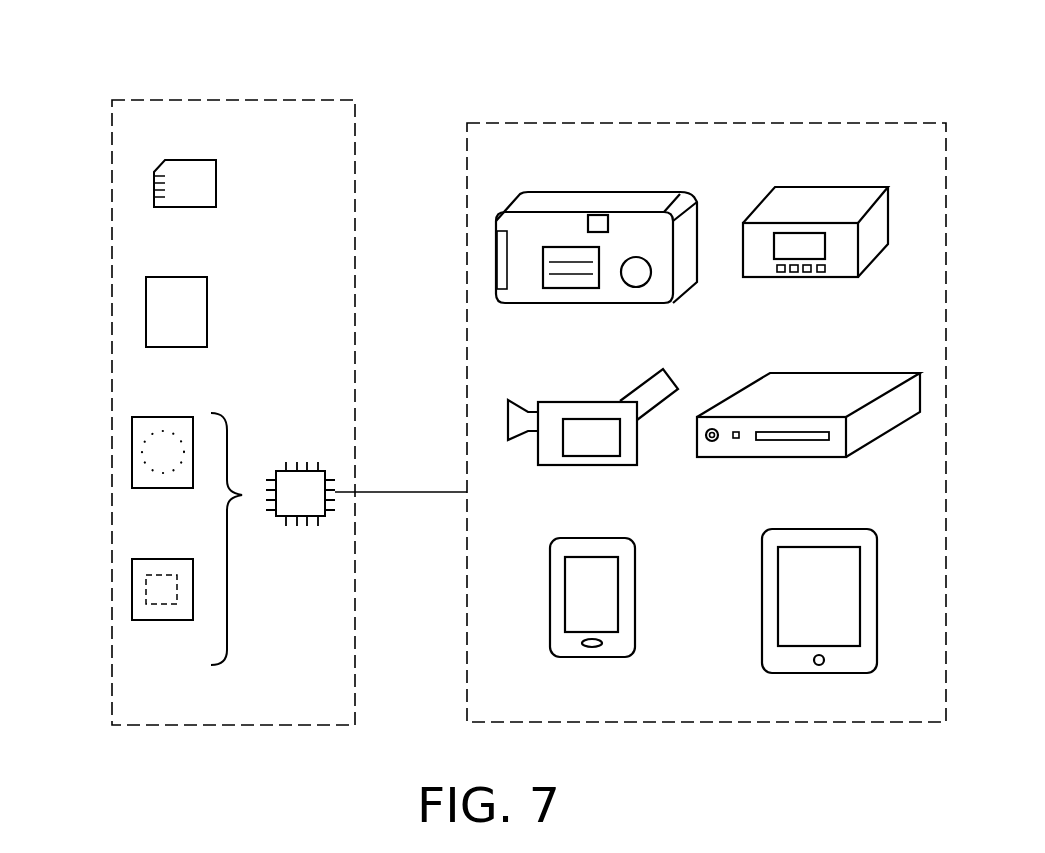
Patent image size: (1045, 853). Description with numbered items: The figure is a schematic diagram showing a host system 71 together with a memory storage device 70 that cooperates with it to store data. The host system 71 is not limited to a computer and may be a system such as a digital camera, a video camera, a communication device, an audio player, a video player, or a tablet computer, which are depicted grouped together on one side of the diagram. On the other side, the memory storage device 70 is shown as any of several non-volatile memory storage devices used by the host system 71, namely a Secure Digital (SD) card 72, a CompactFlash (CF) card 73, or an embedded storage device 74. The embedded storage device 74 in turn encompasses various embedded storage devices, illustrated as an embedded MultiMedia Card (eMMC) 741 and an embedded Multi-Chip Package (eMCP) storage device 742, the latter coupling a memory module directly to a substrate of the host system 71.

The memory storage device 70 is at (222, 100).
The host system 71 is at (632, 123).
The Secure Digital (SD) card 72 is at (154, 191).
The CompactFlash (CF) card 73 is at (146, 313).
The embedded storage device 74 is at (301, 462).
The embedded MultiMedia Card (eMMC) 741 is at (132, 453).
The embedded Multi-Chip Package (eMCP) storage device 742 is at (132, 590).